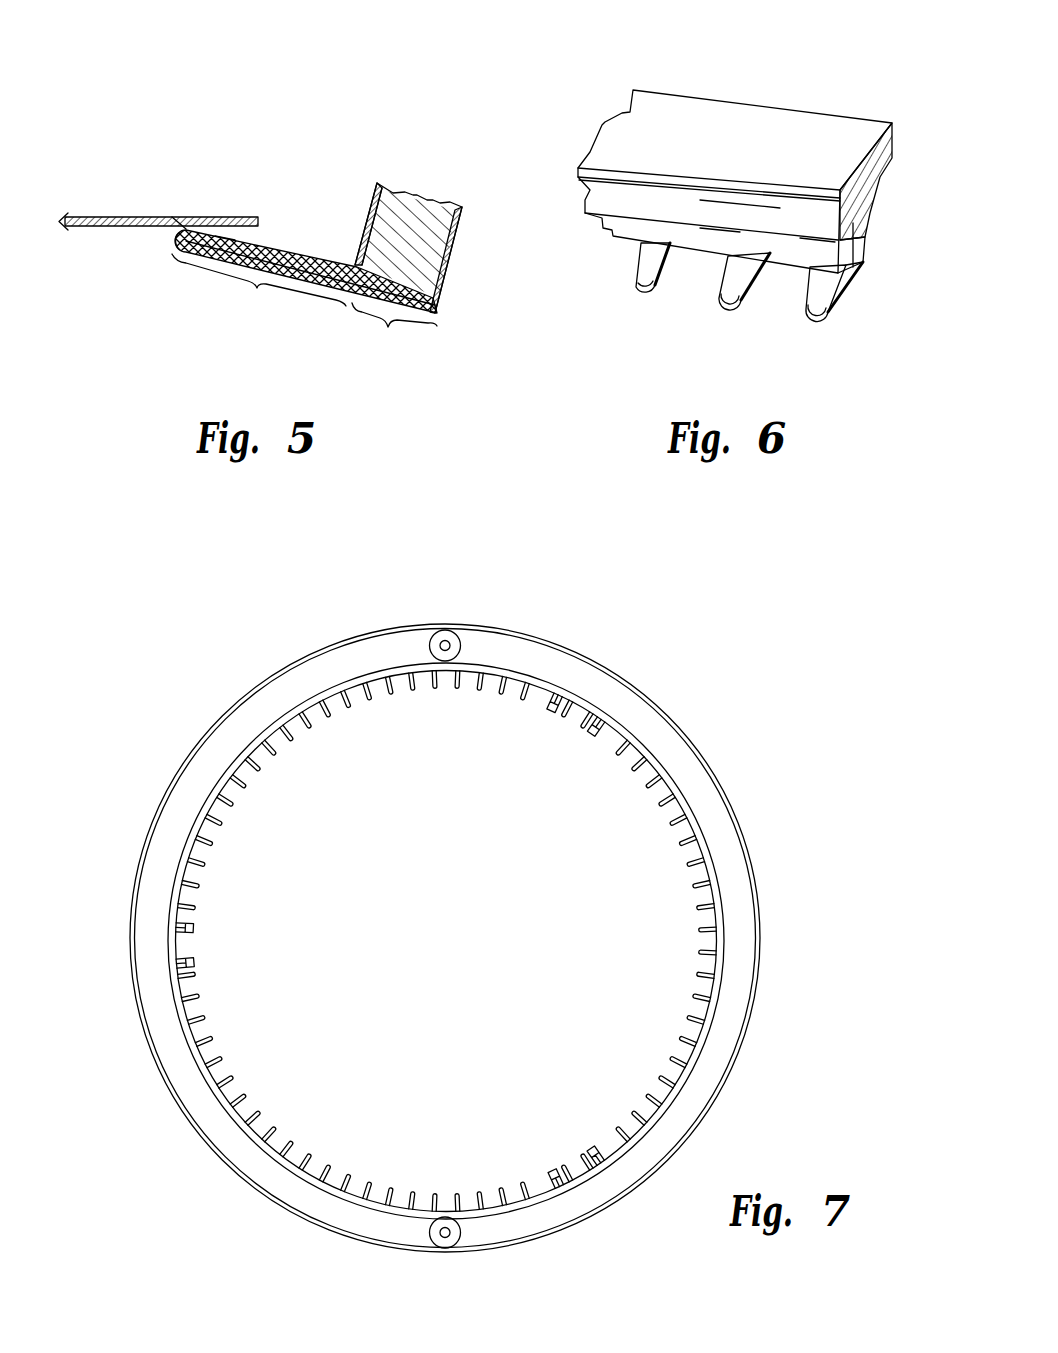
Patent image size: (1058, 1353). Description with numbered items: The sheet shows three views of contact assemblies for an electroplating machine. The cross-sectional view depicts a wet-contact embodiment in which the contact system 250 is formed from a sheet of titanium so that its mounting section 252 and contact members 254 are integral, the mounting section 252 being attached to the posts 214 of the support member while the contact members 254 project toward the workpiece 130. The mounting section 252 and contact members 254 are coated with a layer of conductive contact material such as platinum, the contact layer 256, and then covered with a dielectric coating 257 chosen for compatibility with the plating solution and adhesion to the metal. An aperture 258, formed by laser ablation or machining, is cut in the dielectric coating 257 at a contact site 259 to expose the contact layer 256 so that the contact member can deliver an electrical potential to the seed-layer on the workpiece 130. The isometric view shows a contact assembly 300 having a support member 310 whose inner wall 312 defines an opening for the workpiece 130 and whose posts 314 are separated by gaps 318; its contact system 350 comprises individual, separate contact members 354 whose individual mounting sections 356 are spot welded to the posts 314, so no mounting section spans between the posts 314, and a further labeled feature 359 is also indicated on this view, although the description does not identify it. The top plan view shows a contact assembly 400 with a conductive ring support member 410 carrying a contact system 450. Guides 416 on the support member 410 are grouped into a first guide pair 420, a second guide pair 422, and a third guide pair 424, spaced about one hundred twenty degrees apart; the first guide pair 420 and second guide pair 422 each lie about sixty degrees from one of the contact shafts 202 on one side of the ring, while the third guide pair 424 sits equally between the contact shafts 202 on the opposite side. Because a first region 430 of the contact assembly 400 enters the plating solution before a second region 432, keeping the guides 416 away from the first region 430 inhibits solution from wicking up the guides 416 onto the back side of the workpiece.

In FIG. 5, the workpiece 130 is at (90, 217).
In FIG. 5, the posts 214 is at (420, 206).
In FIG. 5, the contact system 250 is at (212, 258).
In FIG. 5, the mounting section 252 is at (388, 328).
In FIG. 5, the contact members 254 is at (257, 289).
In FIG. 5, the contact layer 256 is at (222, 232).
In FIG. 5, the dielectric coating 257 is at (368, 216).
In FIG. 5, the aperture 258 is at (224, 236).
In FIG. 5, the contact site 259 is at (171, 208).
In FIG. 6, the contact assembly 300 is at (755, 208).
In FIG. 6, the support member 310 is at (847, 132).
In FIG. 6, the inner wall 312 is at (773, 197).
In FIG. 6, the posts 314 is at (652, 240).
In FIG. 6, the gaps 318 is at (717, 250).
In FIG. 6, the contact system 350 is at (777, 267).
In FIG. 6, the individual contact members 354 is at (837, 302).
In FIG. 6, the individual mounting sections 356 is at (860, 266).
In FIG. 6, the slot 359 is at (808, 290).
In FIG. 7, the contact assembly 400 is at (480, 929).
In FIG. 7, the support member 410 is at (567, 660).
In FIG. 7, the guides 416 is at (390, 940).
In FIG. 7, the first guide pair 420 is at (523, 786).
In FIG. 7, the second guide pair 422 is at (575, 1094).
In FIG. 7, the third guide pair 424 is at (246, 968).
In FIG. 7, the first region 430 is at (502, 1253).
In FIG. 7, the second region 432 is at (410, 607).
In FIG. 7, the contact system 450 is at (353, 698).
In FIG. 7, the contact shafts 202 is at (453, 632).